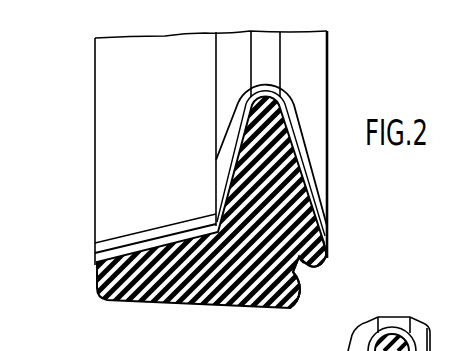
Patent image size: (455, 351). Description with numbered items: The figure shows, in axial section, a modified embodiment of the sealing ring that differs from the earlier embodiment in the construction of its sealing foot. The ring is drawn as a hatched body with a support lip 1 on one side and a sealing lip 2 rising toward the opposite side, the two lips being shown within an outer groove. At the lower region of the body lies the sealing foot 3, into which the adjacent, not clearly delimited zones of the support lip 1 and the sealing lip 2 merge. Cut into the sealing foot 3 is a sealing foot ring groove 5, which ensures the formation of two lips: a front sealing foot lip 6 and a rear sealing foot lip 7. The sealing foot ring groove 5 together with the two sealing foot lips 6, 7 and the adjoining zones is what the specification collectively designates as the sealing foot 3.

The support lip 1 is at (100, 280).
The sealing lip 2 is at (302, 133).
The sealing foot 3 is at (308, 305).
The sealing foot ring groove 5 is at (294, 268).
The front sealing foot lip 6 is at (297, 312).
The rear sealing foot lip 7 is at (330, 270).